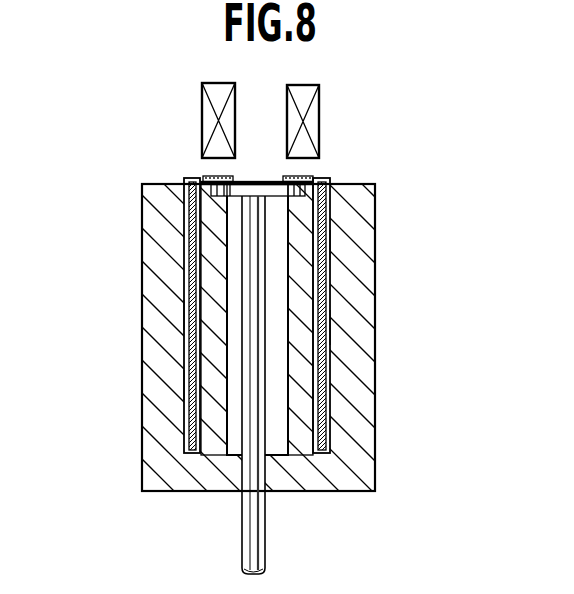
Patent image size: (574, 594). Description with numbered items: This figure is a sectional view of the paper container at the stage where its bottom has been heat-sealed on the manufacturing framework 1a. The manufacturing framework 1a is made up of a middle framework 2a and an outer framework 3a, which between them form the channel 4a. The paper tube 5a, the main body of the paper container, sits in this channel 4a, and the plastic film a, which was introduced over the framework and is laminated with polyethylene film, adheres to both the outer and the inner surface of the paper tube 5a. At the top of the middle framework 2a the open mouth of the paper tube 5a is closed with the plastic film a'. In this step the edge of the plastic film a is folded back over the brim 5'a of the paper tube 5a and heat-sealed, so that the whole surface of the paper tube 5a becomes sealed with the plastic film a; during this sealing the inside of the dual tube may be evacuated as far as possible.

The manufacturing framework 1a is at (390, 438).
The middle framework 2a is at (208, 218).
The outer framework 3a is at (358, 388).
The channel 4a is at (184, 386).
The paper tube 5a is at (190, 266).
The plastic film a is at (255, 277).
The plastic film a' is at (262, 151).
The brim 5'a is at (273, 294).